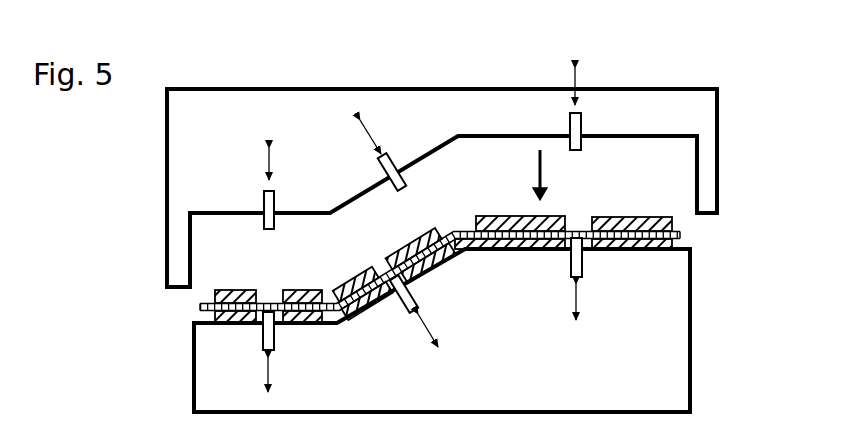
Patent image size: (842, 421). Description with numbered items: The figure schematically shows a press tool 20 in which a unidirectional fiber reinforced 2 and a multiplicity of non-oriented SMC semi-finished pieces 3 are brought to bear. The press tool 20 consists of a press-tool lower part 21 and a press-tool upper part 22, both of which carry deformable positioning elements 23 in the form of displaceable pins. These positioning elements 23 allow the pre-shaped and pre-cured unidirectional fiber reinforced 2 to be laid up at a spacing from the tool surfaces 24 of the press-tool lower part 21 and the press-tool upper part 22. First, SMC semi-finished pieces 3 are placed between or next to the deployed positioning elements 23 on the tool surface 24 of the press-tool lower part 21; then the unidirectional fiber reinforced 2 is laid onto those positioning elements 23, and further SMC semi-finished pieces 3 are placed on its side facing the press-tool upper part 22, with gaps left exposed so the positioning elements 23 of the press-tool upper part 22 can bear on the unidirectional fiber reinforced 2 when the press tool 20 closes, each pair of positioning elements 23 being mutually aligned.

The unidirectional fiber reinforced 2 is at (452, 233).
The SMC semi-finished product 3 is at (229, 289).
The press tool 20 is at (130, 293).
The press-tool lower part 21 is at (677, 333).
The press-tool upper part 22 is at (440, 96).
The positioning element 23 is at (386, 162).
The tool surface 24 is at (612, 139).